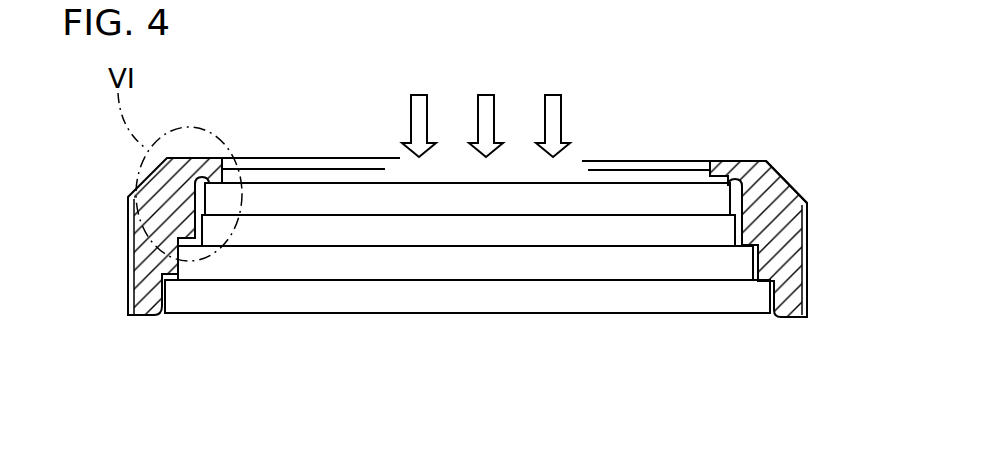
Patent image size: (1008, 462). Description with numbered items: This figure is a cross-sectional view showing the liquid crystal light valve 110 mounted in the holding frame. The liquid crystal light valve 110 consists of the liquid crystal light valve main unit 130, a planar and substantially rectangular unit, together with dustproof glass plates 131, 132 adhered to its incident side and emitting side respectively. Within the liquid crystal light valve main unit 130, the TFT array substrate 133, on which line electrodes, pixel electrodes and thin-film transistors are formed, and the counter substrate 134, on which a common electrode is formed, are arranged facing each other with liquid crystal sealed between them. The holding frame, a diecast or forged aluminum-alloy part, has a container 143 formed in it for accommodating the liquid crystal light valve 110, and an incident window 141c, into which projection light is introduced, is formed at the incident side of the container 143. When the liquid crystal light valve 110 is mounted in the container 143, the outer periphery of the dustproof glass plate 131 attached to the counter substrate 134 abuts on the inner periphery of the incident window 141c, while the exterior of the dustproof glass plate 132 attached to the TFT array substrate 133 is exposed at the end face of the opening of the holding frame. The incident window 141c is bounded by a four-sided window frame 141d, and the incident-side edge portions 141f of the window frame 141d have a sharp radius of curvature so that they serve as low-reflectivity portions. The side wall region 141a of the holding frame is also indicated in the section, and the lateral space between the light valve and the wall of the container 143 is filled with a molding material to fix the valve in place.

The liquid crystal light valve 110 is at (679, 324).
The liquid crystal light valve main unit 130 is at (465, 258).
The dustproof glass plate 131 is at (668, 195).
The dustproof glass plate 132 is at (260, 303).
The TFT array substrate 133 is at (518, 389).
The counter substrate 134 is at (500, 236).
The side wall portion of frame 141a is at (130, 257).
The incident window 141c is at (322, 170).
The window frame 141d is at (272, 160).
The incident-side edge portions 141f is at (613, 168).
The container 143 is at (778, 170).